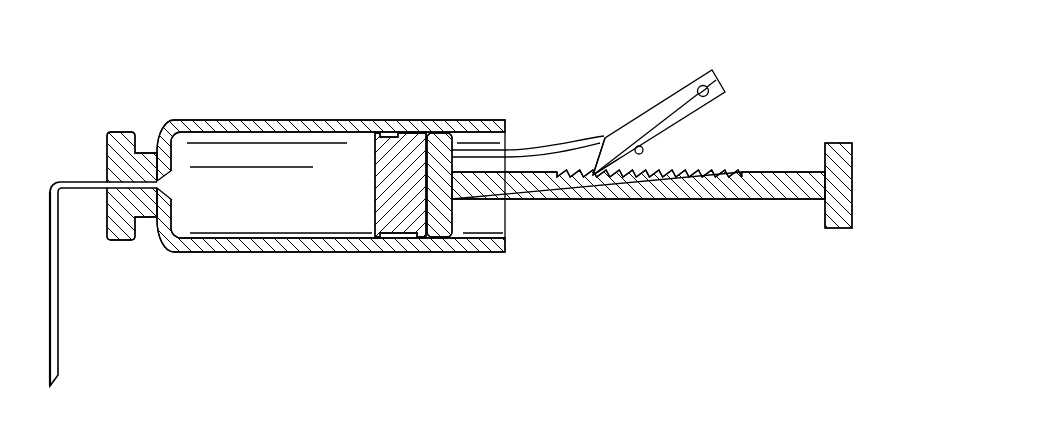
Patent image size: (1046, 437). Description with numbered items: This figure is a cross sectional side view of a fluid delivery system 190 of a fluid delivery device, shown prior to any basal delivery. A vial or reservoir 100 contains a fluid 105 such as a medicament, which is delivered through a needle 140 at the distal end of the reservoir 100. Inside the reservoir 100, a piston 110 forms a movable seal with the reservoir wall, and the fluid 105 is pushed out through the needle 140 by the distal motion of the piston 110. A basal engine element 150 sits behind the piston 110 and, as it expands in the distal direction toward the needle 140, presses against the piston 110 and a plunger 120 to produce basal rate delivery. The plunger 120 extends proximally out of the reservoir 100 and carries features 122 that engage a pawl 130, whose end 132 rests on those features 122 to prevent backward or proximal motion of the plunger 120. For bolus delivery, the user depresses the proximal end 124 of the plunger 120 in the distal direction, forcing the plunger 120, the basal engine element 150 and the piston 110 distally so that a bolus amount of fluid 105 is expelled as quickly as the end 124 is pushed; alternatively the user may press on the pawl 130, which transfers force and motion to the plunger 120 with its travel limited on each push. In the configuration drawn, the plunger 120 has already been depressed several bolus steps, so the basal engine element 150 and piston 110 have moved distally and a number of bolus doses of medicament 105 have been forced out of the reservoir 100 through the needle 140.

The fluid delivery system 190 is at (147, 66).
The reservoir 100 is at (232, 120).
The fluid 105 is at (270, 197).
The piston 110 is at (399, 133).
The basal engine element 150 is at (441, 132).
The plunger 120 is at (643, 199).
The features 122 is at (706, 175).
The proximal end 124 is at (853, 182).
The pawl 130 is at (726, 80).
The end 132 is at (596, 172).
The needle 140 is at (58, 338).